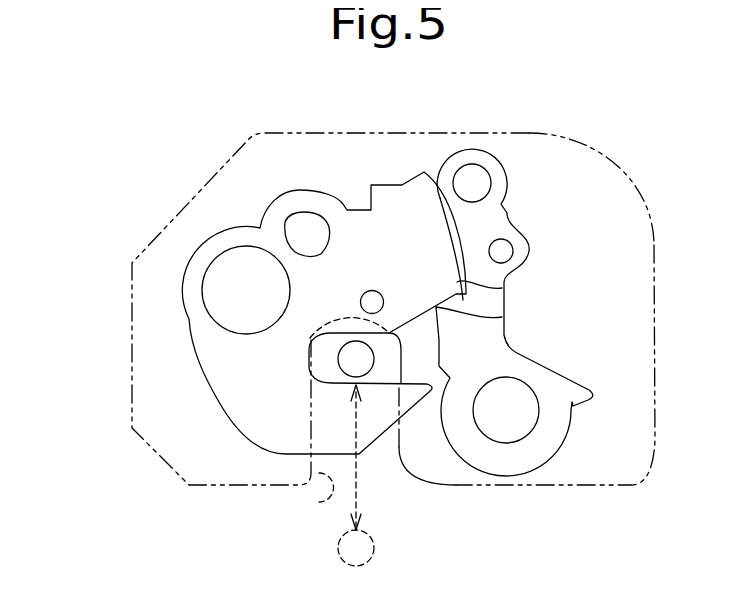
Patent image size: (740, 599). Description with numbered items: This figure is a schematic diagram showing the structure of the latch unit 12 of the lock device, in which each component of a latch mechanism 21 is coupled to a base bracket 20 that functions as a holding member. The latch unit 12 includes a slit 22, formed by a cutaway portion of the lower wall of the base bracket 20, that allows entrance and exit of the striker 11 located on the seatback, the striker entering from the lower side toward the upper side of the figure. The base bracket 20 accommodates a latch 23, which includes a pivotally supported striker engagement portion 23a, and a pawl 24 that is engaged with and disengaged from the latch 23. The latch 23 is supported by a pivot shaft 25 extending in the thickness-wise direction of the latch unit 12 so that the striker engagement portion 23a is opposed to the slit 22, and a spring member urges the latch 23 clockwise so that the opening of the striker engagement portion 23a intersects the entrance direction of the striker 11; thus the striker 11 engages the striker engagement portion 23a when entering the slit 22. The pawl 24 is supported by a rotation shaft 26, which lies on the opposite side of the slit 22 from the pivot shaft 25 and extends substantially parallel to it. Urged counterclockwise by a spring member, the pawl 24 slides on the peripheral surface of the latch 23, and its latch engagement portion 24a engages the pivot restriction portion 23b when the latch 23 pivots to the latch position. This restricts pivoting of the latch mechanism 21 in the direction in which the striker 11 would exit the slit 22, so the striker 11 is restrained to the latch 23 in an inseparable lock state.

The striker 11 is at (339, 357).
The latch unit 12 is at (77, 122).
The base bracket 20 is at (627, 178).
The latch mechanism 21 is at (609, 474).
The slit 22 is at (322, 500).
The latch 23 is at (230, 411).
The striker engagement portion 23a is at (332, 338).
The pivot restriction portion 23b is at (505, 287).
The pawl 24 is at (570, 384).
The latch engagement portion 24a is at (505, 317).
The pivot shaft 25 is at (217, 258).
The rotation shaft 26 is at (513, 443).